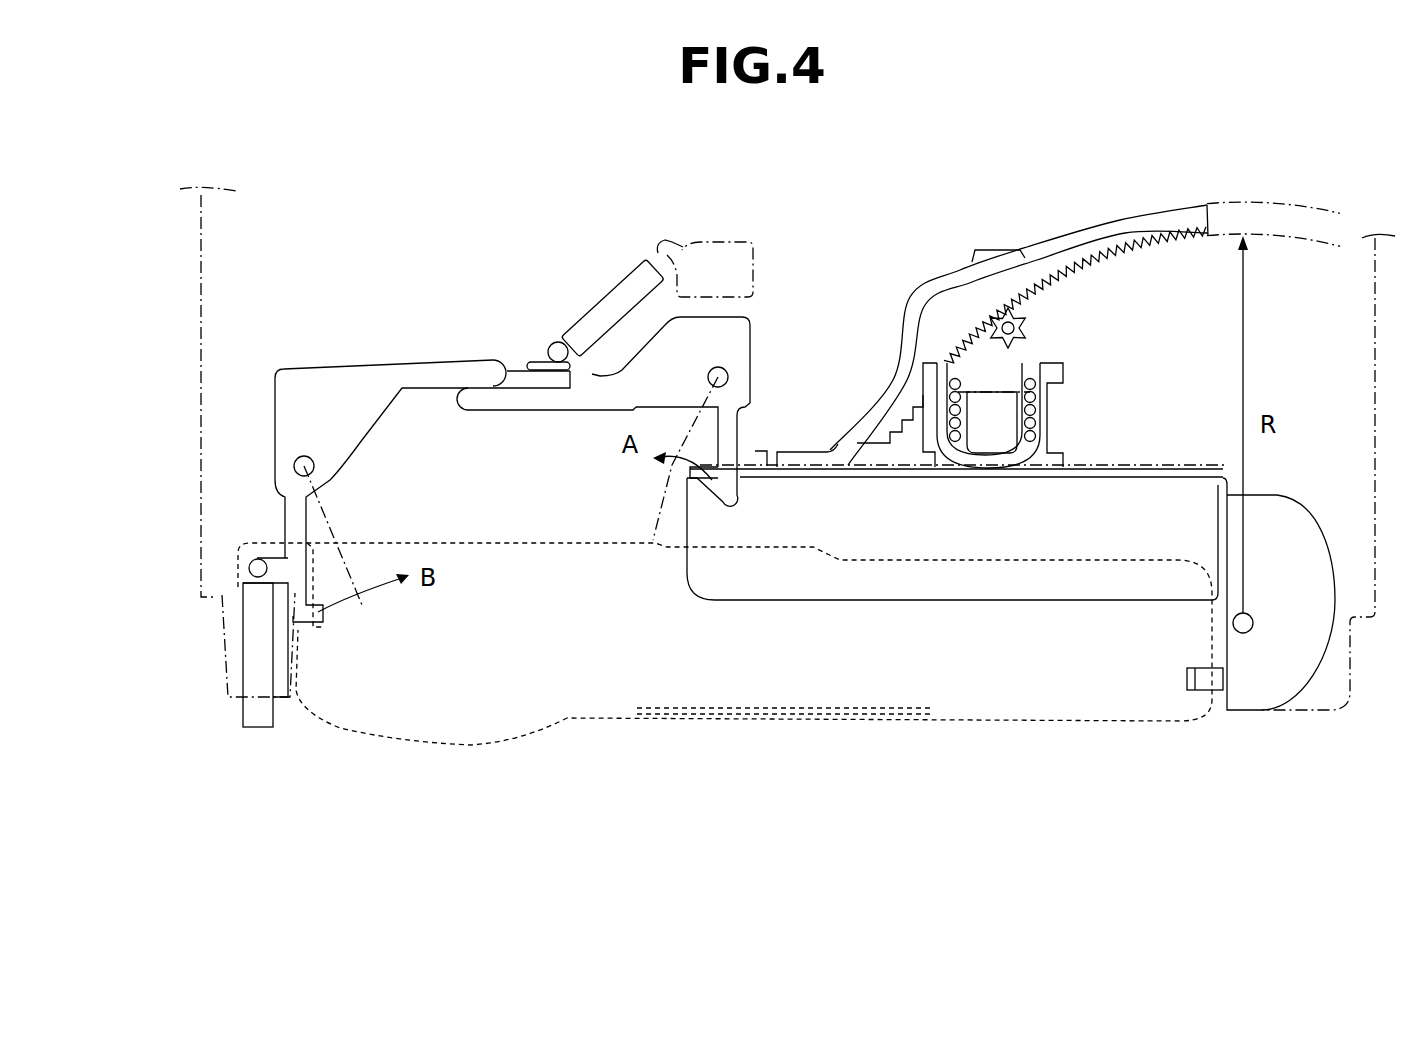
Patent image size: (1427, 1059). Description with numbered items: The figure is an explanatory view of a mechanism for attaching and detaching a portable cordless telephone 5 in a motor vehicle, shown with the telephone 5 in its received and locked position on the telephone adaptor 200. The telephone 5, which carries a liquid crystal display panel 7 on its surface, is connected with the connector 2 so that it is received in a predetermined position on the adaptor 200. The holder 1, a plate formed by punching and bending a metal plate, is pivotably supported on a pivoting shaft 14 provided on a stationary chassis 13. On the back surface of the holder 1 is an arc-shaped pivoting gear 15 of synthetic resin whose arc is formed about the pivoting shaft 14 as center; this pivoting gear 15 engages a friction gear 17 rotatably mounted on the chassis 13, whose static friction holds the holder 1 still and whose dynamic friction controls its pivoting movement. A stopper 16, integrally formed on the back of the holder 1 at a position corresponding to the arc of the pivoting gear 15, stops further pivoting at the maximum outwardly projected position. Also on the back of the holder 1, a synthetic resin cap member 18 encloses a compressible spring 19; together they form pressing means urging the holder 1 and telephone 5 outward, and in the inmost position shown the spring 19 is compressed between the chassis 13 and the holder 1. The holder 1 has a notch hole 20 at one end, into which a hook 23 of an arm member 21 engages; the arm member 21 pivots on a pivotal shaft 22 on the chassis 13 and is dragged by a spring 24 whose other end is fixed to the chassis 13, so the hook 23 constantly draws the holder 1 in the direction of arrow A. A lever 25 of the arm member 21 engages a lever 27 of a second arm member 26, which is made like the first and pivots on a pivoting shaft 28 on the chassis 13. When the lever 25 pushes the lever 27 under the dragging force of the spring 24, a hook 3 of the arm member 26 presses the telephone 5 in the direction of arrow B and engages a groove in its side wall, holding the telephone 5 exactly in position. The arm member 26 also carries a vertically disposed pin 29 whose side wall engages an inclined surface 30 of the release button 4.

The telephone adaptor 200 is at (186, 317).
The holder 1 is at (1097, 588).
The connector 2 is at (1203, 673).
The hook 3 is at (288, 612).
The release button 4 is at (258, 722).
The portable cordless telephone 5 is at (473, 742).
The liquid crystal display panel 7 is at (763, 716).
The stationary chassis 13 is at (730, 243).
The pivoting shaft 14 is at (1252, 630).
The pivoting gear 15 is at (1123, 243).
The stopper 16 is at (990, 250).
The friction gear 17 is at (1032, 325).
The cap member 18 is at (1040, 420).
The compressible spring 19 is at (1040, 392).
The notch hole 20 is at (757, 452).
The arm member 21 is at (606, 405).
The pivotal shaft 22 is at (727, 372).
The hook 23 is at (724, 490).
The spring 24 is at (641, 283).
The lever 25 is at (480, 404).
The arm member 26 is at (296, 388).
The lever 27 is at (485, 380).
The pivoting shaft 28 is at (294, 466).
The pin 29 is at (249, 570).
The inclined surface 30 is at (243, 590).